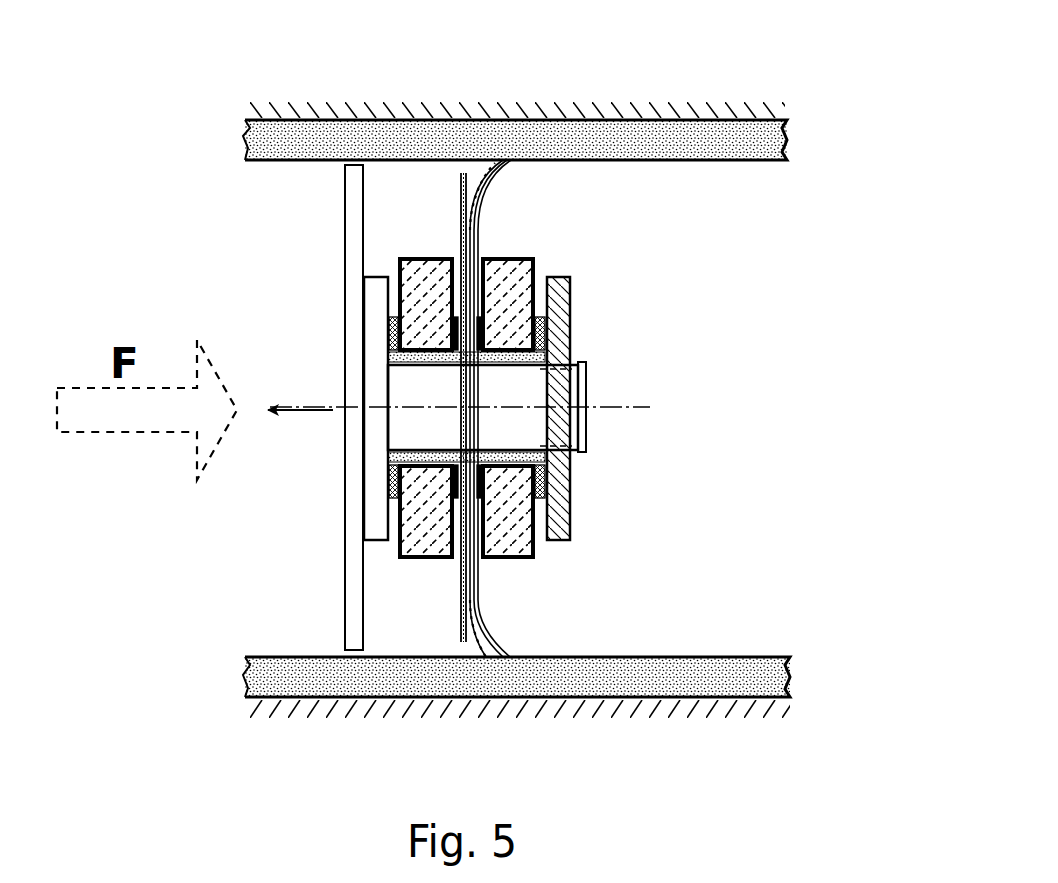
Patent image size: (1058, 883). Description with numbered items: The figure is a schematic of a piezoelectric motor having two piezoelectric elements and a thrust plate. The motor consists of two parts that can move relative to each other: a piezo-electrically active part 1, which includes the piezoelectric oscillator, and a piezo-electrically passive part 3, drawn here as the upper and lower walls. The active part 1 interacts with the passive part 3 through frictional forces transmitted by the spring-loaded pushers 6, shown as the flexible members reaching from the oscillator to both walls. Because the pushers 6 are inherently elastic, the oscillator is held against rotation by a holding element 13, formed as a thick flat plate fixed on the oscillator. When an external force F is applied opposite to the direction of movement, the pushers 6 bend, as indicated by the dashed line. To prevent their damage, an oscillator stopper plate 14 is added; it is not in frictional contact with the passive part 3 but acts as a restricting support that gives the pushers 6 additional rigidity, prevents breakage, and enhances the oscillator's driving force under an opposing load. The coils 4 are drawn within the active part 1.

The piezo-electrically active part 1 is at (583, 533).
The passive part 3 is at (723, 168).
The coils 4 is at (520, 500).
The spring-loaded pushers 6 is at (567, 408).
The holding element 13 is at (265, 407).
The oscillator stopper plate 14 is at (387, 327).